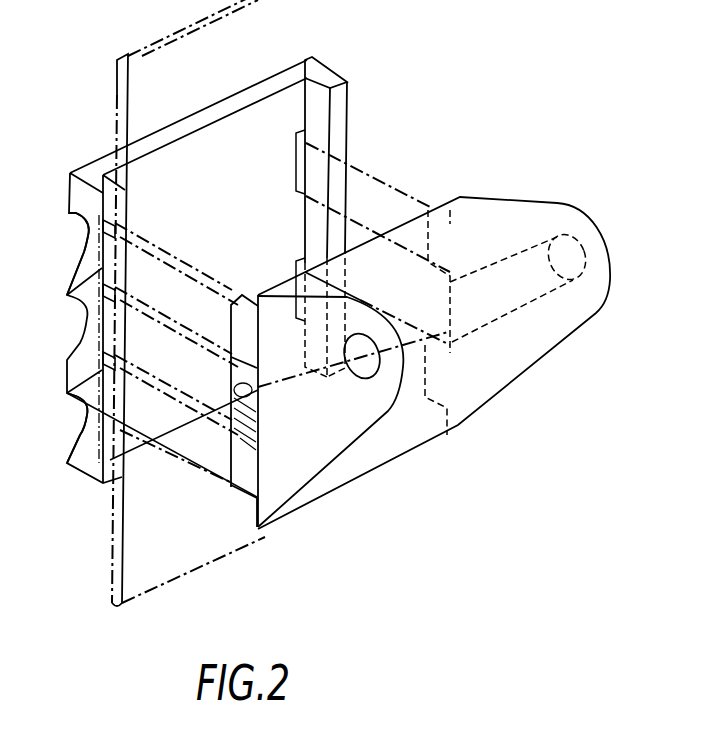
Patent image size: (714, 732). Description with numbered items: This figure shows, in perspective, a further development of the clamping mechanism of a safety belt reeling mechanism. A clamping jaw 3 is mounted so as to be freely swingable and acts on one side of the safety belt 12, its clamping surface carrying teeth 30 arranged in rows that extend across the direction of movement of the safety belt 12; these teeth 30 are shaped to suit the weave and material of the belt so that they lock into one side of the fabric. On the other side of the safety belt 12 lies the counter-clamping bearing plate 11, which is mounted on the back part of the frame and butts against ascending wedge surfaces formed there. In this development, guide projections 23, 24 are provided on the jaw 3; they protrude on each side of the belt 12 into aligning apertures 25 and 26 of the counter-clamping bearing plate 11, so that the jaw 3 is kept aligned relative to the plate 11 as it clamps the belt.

The clamping jaw 3 is at (540, 222).
The counter-clamping bearing plate 11 is at (263, 90).
The safety belt 12 is at (117, 90).
The guide projection 23 is at (247, 343).
The guide projection 24 is at (433, 210).
The aligning aperture 25 is at (67, 392).
The aligning aperture 26 is at (307, 263).
The teeth 30 is at (258, 405).